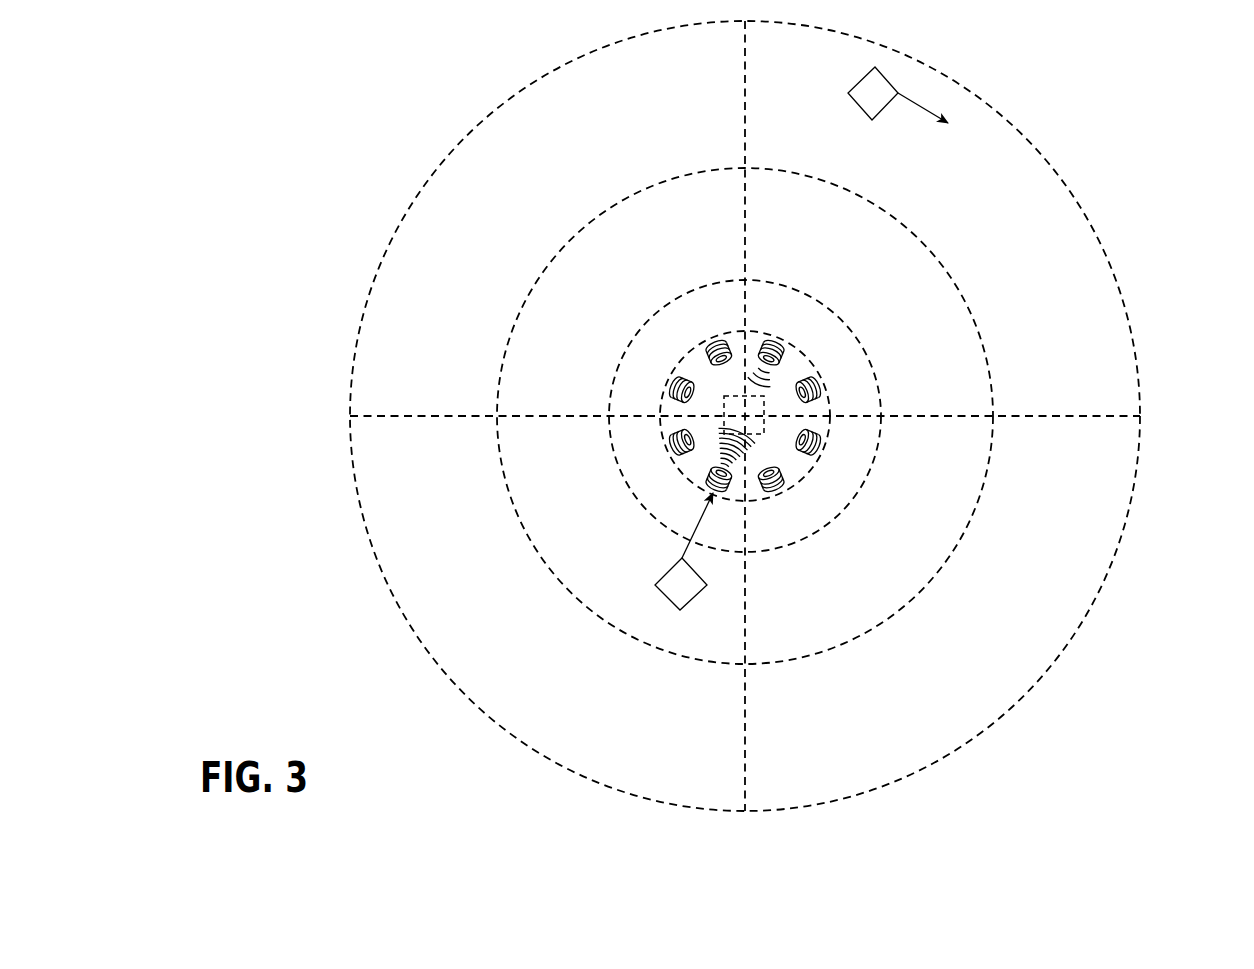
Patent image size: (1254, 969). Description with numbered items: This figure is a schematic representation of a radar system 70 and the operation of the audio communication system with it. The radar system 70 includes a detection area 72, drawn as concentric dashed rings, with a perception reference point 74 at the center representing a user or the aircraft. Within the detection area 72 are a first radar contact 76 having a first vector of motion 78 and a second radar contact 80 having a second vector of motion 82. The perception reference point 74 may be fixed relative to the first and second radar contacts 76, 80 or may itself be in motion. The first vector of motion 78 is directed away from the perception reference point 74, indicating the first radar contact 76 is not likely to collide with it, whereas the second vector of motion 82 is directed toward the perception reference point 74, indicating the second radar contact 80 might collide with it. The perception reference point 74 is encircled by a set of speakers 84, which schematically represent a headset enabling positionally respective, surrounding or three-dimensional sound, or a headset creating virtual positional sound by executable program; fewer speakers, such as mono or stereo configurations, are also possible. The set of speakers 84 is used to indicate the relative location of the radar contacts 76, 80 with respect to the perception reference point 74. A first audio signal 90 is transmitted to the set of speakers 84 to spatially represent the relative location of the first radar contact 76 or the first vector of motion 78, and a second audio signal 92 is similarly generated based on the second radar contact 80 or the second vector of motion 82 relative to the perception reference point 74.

The radar system 70 is at (453, 56).
The detection area 72 is at (1105, 173).
The perception reference point 74 is at (737, 423).
The first radar contact 76 is at (866, 104).
The first vector of motion 78 is at (918, 102).
The second radar contact 80 is at (674, 596).
The second vector of motion 82 is at (696, 527).
The set of speakers 84 is at (663, 433).
The first audio signal 90 is at (783, 378).
The second audio signal 92 is at (757, 449).